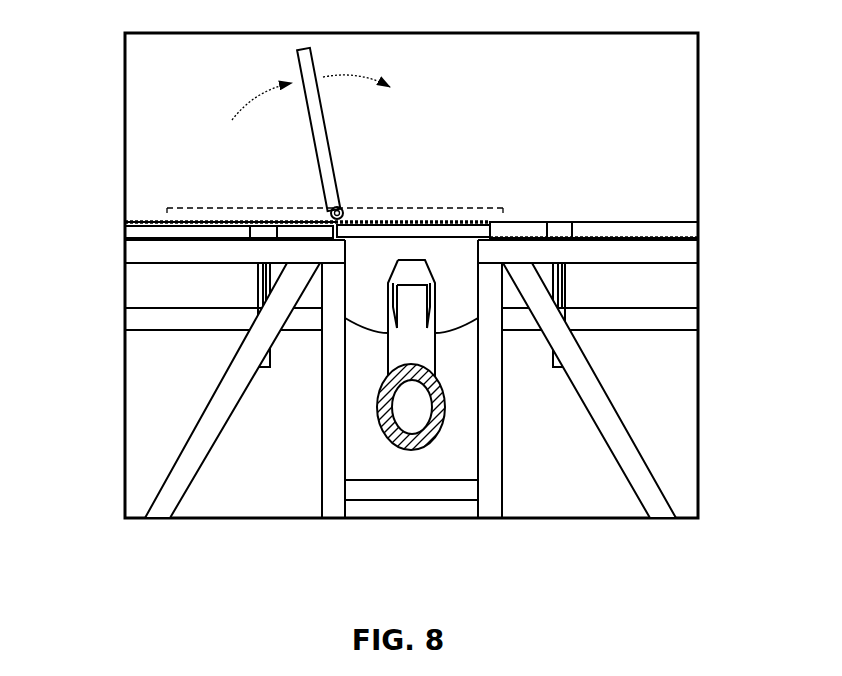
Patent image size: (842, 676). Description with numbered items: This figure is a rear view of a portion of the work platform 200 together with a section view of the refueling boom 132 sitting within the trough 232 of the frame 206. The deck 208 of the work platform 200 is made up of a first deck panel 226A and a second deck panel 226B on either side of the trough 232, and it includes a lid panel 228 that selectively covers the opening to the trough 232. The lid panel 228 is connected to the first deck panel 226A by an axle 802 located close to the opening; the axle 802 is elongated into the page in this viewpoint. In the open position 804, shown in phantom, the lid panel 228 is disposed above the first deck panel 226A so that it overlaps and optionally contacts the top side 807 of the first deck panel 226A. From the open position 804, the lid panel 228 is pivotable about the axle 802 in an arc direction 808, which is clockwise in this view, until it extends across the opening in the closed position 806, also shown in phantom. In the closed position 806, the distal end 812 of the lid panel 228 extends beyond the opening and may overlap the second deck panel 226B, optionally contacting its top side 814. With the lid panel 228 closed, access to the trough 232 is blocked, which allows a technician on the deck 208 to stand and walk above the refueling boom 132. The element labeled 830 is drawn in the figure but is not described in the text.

The work platform 200 is at (90, 322).
The frame 206 is at (340, 490).
The deck 208 is at (143, 230).
The first deck panel 226A is at (203, 233).
The second deck panel 226B is at (642, 232).
The lid panel 228 is at (306, 66).
The trough 232 is at (448, 458).
The refueling boom 132 is at (427, 407).
The axle 802 is at (330, 213).
The open position 804 is at (192, 205).
The closed position 806 is at (465, 205).
The top side of the first deck panel 807 is at (152, 223).
The arc direction 808 is at (358, 76).
The distal end 812 is at (505, 207).
The top side of the second deck panel 814 is at (560, 222).
The center plate 830 is at (452, 237).